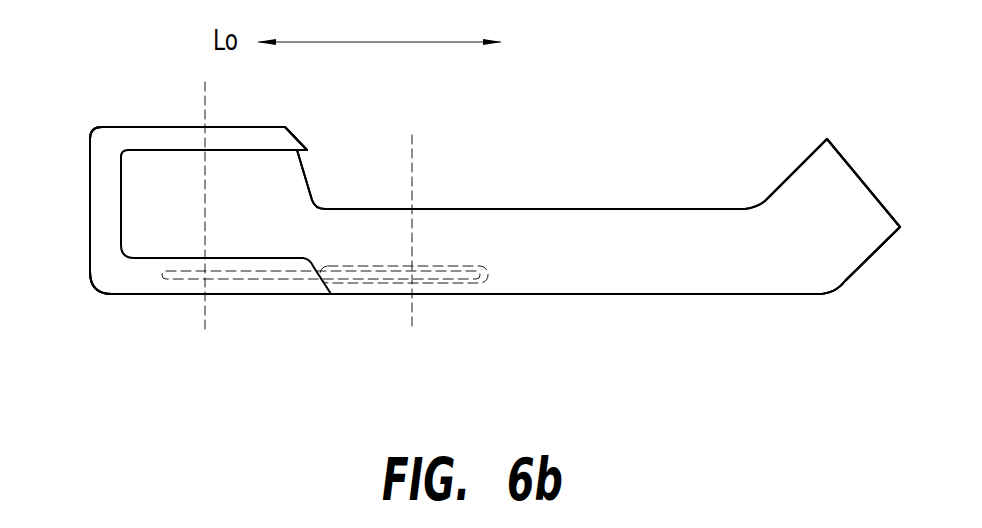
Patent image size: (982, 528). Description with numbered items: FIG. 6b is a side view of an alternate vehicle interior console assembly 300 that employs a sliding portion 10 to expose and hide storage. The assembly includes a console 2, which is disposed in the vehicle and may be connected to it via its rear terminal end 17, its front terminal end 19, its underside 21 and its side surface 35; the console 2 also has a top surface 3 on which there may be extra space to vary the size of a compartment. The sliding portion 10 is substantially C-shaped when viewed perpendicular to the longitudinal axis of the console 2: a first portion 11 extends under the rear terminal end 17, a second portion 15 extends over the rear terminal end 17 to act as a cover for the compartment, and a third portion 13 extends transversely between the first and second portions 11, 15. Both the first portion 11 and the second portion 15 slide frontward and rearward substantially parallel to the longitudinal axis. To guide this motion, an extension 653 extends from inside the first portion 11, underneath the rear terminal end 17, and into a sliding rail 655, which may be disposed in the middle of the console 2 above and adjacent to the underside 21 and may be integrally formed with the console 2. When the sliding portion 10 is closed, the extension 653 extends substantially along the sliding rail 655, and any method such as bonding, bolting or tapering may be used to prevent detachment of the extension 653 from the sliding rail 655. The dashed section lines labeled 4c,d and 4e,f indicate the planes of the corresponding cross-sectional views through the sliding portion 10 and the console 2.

The console 2 is at (602, 296).
The top surface 3 is at (573, 209).
The sliding portion 10 is at (103, 148).
The first portion 11 is at (113, 282).
The third portion 13 is at (105, 212).
The second portion 15 is at (153, 135).
The rear terminal end 17 is at (153, 195).
The front terminal end 19 is at (853, 195).
The underside 21 is at (258, 258).
The side surface 35 is at (752, 257).
The console assembly 300 is at (740, 426).
The extension 653 is at (222, 272).
The sliding rail 655 is at (473, 280).
The section line 4c,4d 4c,d is at (205, 82).
The section line 4e,4f 4e,f is at (410, 136).